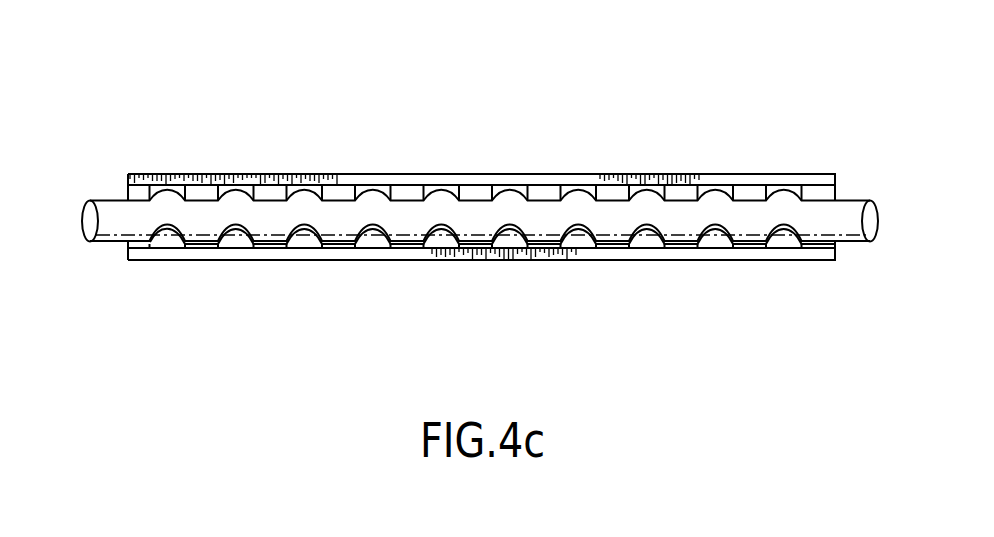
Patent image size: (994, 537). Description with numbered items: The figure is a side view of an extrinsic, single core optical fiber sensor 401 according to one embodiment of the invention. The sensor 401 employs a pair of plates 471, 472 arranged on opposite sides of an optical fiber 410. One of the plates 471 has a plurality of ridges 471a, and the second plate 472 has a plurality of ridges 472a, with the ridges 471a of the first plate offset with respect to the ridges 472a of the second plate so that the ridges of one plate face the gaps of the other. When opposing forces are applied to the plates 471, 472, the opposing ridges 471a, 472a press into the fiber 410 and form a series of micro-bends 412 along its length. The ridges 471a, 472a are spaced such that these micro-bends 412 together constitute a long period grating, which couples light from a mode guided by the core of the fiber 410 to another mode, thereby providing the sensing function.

The extrinsic single core sensor 401 is at (474, 204).
The optical fiber 410 is at (103, 248).
The plate 471 is at (481, 134).
The ridges 471a is at (338, 198).
The second plate 472 is at (481, 297).
The ridges 472a is at (372, 246).
The micro-bends 412 is at (648, 212).